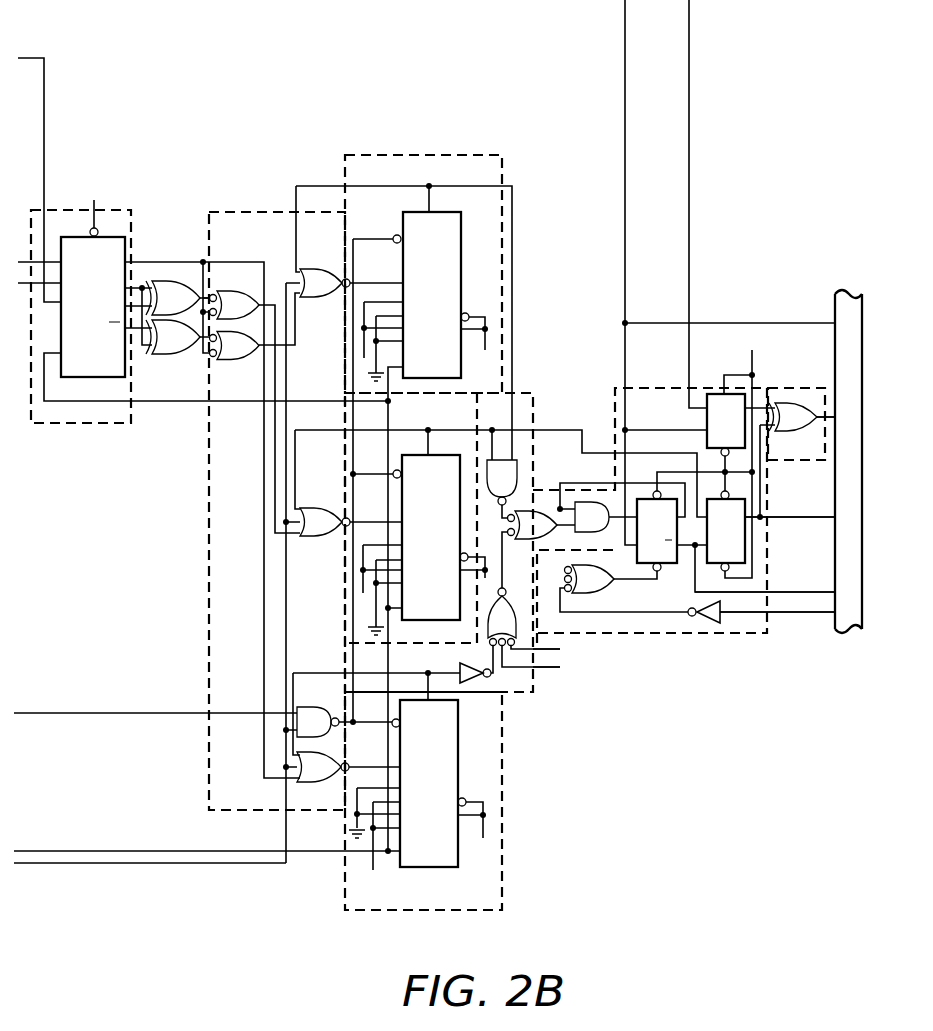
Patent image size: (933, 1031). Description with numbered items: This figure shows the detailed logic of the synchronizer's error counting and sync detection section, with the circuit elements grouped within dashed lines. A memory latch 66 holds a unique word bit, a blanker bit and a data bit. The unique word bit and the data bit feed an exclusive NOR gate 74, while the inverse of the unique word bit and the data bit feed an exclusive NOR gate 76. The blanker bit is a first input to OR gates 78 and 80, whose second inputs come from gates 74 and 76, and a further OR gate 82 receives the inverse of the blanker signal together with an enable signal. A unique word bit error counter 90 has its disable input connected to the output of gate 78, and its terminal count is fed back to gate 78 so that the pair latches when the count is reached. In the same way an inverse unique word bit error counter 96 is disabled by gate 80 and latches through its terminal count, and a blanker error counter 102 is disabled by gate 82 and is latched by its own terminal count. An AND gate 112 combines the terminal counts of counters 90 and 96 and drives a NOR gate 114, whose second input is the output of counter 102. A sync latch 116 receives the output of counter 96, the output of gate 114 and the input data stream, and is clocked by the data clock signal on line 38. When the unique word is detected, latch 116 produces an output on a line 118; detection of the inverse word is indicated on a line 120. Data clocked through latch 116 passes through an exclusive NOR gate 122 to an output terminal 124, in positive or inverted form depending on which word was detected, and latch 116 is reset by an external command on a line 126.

The memory latch 66 is at (125, 210).
The exclusive NOR gate 74 is at (178, 284).
The exclusive NOR gate 76 is at (176, 352).
The OR gate 78 is at (248, 213).
The OR gate 80 is at (280, 434).
The OR gate 82 is at (323, 744).
The inverse unique word bit error counter 96 is at (470, 155).
The AND gate 112 is at (478, 421).
The unique word bit error counter 90 is at (436, 648).
The blanker error counter 102 is at (502, 888).
The NOR gate 114 is at (540, 642).
The sync latch 116 is at (651, 388).
The exclusive NOR gate 122 is at (805, 371).
The line 38 is at (848, 461).
The output terminal 124 is at (838, 418).
The line 120 is at (802, 518).
The line 118 is at (777, 593).
The line 126 is at (789, 613).